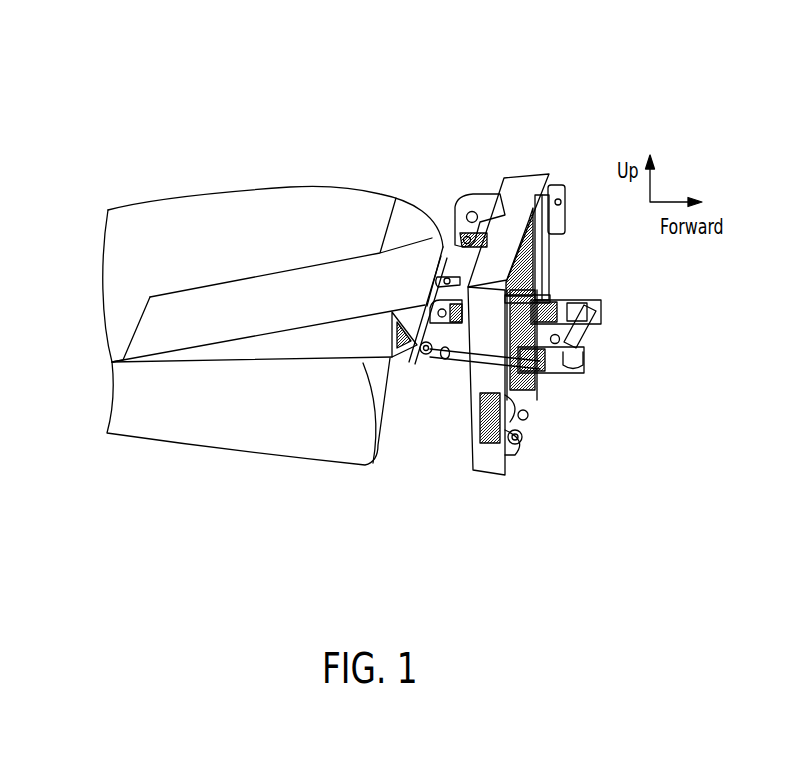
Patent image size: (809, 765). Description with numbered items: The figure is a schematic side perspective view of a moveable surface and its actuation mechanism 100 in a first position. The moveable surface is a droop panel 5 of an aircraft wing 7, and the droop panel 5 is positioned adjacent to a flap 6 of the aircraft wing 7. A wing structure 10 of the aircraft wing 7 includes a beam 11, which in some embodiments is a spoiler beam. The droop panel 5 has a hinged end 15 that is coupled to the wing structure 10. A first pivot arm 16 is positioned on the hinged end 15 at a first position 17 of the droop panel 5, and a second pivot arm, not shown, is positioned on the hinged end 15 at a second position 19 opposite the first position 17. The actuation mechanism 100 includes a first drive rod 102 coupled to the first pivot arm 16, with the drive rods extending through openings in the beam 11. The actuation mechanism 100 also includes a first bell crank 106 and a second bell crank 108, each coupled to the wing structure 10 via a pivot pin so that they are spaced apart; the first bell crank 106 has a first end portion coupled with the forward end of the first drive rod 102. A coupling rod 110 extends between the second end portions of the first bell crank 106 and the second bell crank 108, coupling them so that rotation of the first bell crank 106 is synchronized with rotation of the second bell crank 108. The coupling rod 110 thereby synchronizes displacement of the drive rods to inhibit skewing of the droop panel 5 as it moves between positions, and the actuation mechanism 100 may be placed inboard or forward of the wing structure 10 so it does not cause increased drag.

The droop panel 5 is at (270, 290).
The aircraft wing 7 is at (264, 131).
The flap 6 is at (213, 420).
The wing structure 10 is at (492, 508).
The beam 11 is at (520, 213).
The hinged end 15 is at (399, 217).
The first pivot arm 16 is at (366, 384).
The first position 17 is at (410, 348).
The second position 19 is at (403, 244).
The actuation mechanism 100 is at (408, 128).
The first drive rod 102 is at (473, 372).
The first bell crank 106 is at (545, 372).
The second bell crank 108 is at (563, 302).
The coupling rod 110 is at (604, 317).